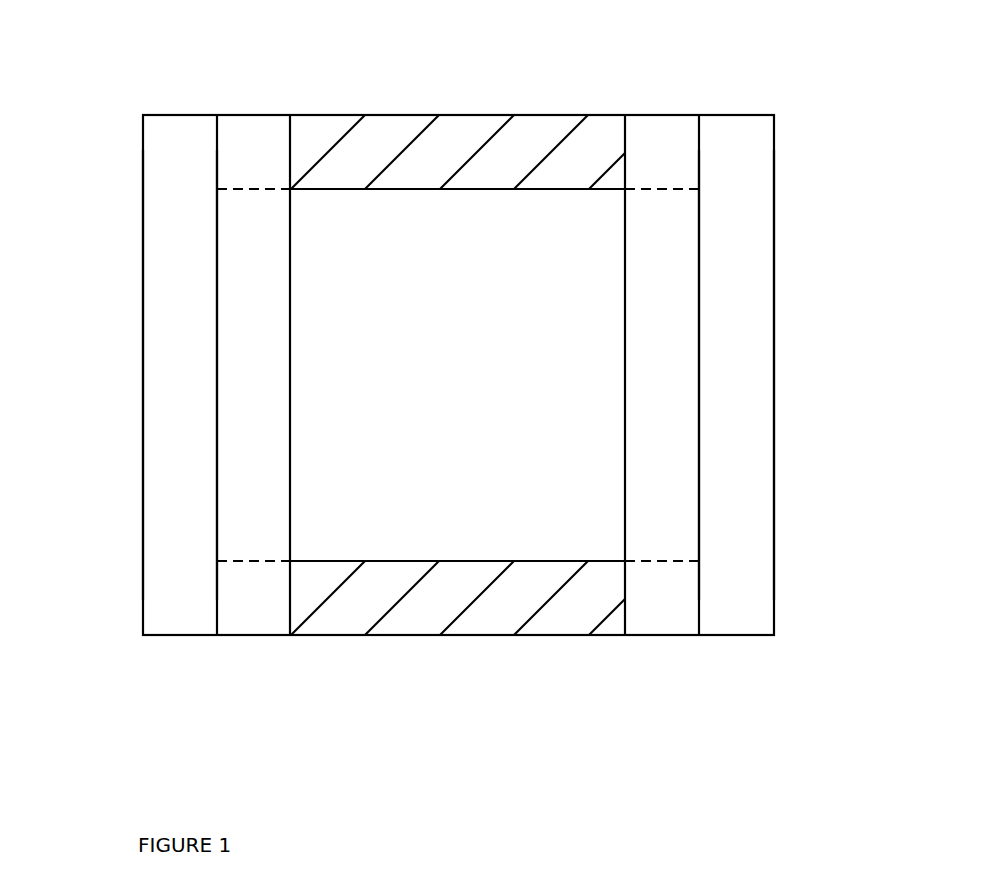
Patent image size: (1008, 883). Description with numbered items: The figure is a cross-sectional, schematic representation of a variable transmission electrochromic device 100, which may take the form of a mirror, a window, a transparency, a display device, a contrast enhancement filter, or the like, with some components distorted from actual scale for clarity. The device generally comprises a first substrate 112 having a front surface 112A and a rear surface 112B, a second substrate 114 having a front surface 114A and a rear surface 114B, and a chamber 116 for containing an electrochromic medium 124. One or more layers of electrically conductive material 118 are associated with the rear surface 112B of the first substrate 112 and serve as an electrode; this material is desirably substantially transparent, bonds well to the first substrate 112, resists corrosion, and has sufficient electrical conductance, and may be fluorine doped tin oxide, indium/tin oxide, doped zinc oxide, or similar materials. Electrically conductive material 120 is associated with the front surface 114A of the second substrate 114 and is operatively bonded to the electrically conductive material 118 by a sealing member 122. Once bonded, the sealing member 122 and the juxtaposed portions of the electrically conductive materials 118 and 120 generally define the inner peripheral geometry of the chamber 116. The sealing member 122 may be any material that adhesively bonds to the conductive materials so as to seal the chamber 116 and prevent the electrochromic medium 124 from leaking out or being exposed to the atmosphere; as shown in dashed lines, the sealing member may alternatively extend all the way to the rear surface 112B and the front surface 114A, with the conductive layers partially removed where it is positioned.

The variable transmission electrochromic device 100 is at (503, 71).
The first substrate 112 is at (736, 652).
The front surface 112A is at (774, 536).
The rear surface 112B is at (699, 285).
The second substrate 114 is at (180, 652).
The front surface 114A is at (217, 285).
The rear surface 114B is at (143, 523).
The chamber 116 is at (477, 396).
The electrically conductive material 118 is at (662, 527).
The electrically conductive material 120 is at (254, 527).
The sealing member 122 is at (329, 133).
The electrochromic medium 124 is at (514, 489).